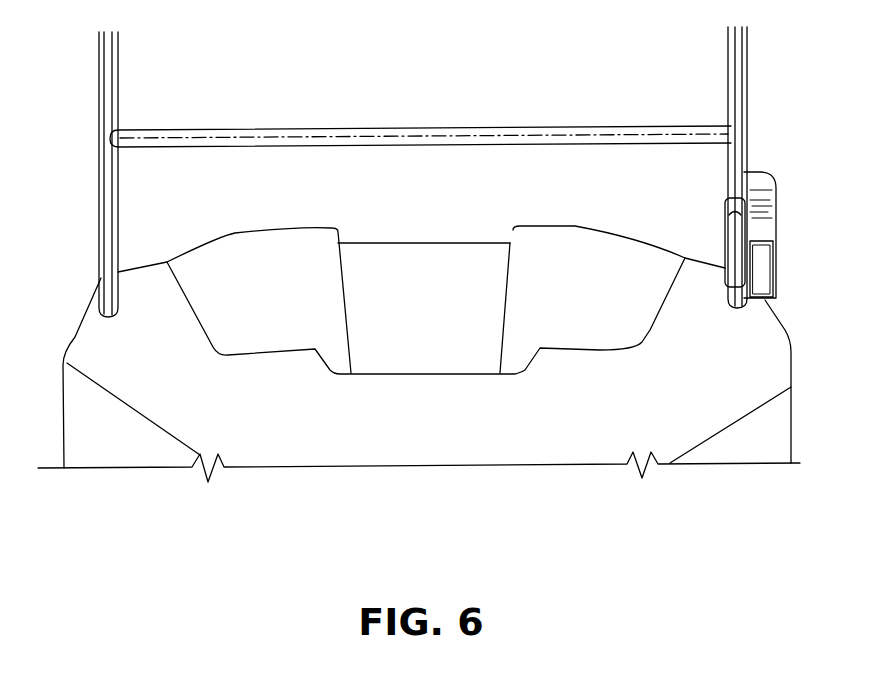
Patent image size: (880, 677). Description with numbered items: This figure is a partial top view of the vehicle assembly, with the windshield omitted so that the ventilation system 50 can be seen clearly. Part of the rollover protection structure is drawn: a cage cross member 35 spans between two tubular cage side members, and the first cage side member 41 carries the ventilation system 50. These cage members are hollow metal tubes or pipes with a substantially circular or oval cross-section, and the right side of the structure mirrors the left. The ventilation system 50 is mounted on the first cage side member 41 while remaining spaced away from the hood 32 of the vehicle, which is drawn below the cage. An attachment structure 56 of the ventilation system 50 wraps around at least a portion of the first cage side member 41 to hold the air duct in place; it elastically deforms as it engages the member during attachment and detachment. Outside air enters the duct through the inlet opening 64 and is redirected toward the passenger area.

The hood 32 is at (438, 360).
The first cage side member 41 is at (101, 100).
The cage cross member 35 is at (468, 133).
The ventilation system 50 is at (751, 237).
The attachment structure 56 is at (727, 237).
The inlet opening 64 is at (767, 265).